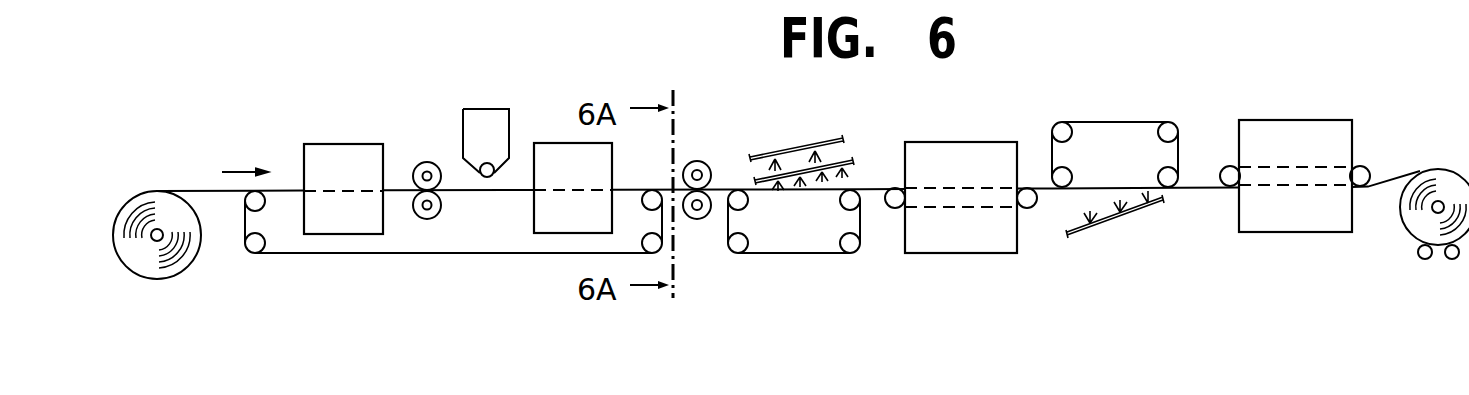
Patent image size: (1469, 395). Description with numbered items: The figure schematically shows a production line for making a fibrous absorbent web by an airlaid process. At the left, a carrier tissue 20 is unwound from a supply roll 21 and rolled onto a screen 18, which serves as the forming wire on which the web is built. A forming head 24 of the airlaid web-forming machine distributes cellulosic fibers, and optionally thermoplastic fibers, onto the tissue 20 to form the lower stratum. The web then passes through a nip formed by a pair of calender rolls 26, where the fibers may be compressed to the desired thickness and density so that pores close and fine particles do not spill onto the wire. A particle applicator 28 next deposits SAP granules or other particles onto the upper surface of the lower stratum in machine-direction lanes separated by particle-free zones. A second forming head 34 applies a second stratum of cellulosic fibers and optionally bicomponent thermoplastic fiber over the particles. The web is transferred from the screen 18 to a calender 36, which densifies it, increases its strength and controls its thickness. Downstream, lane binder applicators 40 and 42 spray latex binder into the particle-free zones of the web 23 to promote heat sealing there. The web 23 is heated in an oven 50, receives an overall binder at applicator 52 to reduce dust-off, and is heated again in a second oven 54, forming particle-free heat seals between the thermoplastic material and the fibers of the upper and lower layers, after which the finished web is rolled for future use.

The screen 18 is at (460, 255).
The carrier tissue 20 is at (199, 191).
The supply roll 21 is at (170, 262).
The airlaid web 23 is at (723, 188).
The forming head 24 is at (329, 158).
The calender rolls 26 is at (440, 200).
The particle applicator 28 is at (496, 114).
The forming head 34 is at (545, 213).
The calender 36 is at (700, 214).
The lane binder applicator 40 is at (793, 148).
The lane binder applicator 42 is at (853, 158).
The oven 50 is at (975, 242).
The overall binder applicator 52 is at (1120, 214).
The second oven 54 is at (1330, 132).